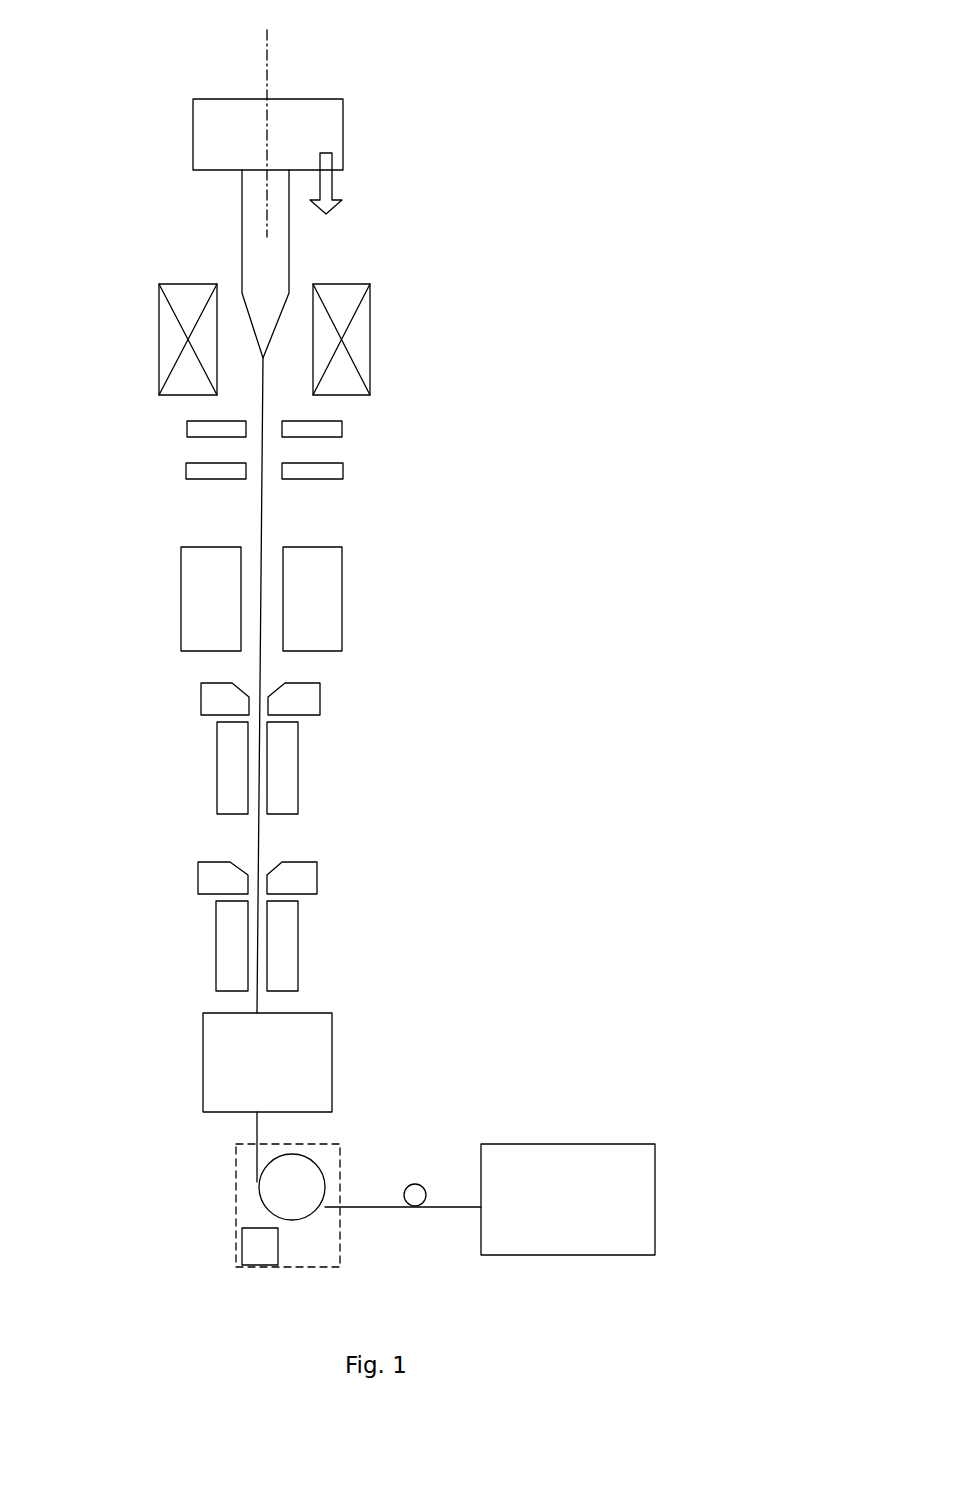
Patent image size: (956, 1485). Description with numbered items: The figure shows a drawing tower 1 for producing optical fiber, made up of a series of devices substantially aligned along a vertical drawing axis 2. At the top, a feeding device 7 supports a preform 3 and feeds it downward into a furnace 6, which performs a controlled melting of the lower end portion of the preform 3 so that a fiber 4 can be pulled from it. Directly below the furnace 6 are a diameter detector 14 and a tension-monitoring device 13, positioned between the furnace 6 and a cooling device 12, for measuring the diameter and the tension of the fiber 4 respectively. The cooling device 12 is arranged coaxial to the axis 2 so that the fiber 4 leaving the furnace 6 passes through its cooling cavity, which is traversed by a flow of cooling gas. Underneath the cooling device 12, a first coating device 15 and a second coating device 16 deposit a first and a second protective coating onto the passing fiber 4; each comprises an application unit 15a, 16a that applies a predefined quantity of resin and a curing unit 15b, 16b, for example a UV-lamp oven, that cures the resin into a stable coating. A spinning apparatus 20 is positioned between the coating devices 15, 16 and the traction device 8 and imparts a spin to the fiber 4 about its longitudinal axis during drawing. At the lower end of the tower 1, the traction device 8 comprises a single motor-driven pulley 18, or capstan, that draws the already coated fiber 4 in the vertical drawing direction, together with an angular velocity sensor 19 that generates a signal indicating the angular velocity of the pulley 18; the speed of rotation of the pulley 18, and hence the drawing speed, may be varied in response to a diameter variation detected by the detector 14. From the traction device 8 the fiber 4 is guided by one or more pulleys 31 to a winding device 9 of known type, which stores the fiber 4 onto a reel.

The drawing tower 1 is at (447, 255).
The vertical drawing axis 2 is at (267, 70).
The preform 3 is at (270, 262).
The fiber 4 is at (262, 521).
The furnace 6 is at (357, 357).
The feeding device 7 is at (340, 137).
The traction device 8 is at (243, 1152).
The winding device 9 is at (607, 1152).
The cooling device 12 is at (338, 588).
The tension-monitoring device 13 is at (335, 472).
The diameter detector 14 is at (337, 430).
The first coating device 15 is at (336, 750).
The application unit 15a is at (303, 703).
The curing unit 15b is at (288, 762).
The second coating device 16 is at (336, 924).
The application unit 16a is at (307, 880).
The curing unit 16b is at (303, 946).
The motor-driven pulley 18 is at (302, 1213).
The angular velocity sensor 19 is at (252, 1257).
The spinning apparatus 20 is at (215, 1045).
The pulley 31 is at (410, 1193).